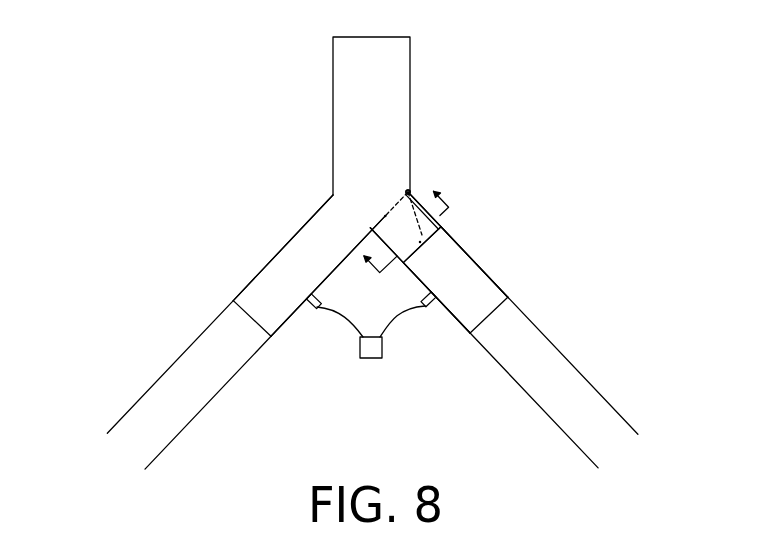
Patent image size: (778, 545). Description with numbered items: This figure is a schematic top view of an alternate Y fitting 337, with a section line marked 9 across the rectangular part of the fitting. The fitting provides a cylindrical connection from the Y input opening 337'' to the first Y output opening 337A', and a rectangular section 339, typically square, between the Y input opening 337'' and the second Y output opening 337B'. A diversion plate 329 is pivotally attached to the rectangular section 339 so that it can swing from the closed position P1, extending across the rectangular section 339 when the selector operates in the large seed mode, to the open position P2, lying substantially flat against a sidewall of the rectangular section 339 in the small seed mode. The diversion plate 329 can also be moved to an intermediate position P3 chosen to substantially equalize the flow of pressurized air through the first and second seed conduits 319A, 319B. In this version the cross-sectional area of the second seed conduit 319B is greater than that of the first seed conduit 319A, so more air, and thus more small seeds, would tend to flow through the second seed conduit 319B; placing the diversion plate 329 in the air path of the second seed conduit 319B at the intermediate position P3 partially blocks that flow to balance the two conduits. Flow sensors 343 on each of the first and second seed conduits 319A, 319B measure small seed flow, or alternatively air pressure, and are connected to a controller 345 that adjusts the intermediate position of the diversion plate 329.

The Y input opening 337'' is at (424, 116).
The alternate Y fitting 337 is at (367, 248).
The first Y output opening 337A' is at (247, 265).
The second Y output opening 337B' is at (518, 280).
The first seed conduit 319A is at (158, 377).
The second seed conduit 319B is at (590, 373).
The diversion plate 329 is at (434, 226).
The rectangular section 339 is at (455, 258).
The flow sensors 343 is at (312, 309).
The controller 345 is at (382, 358).
The closed position P1 is at (423, 227).
The open position P2 is at (496, 215).
The intermediate position P3 is at (383, 217).
The section line 9- 9 is at (400, 230).